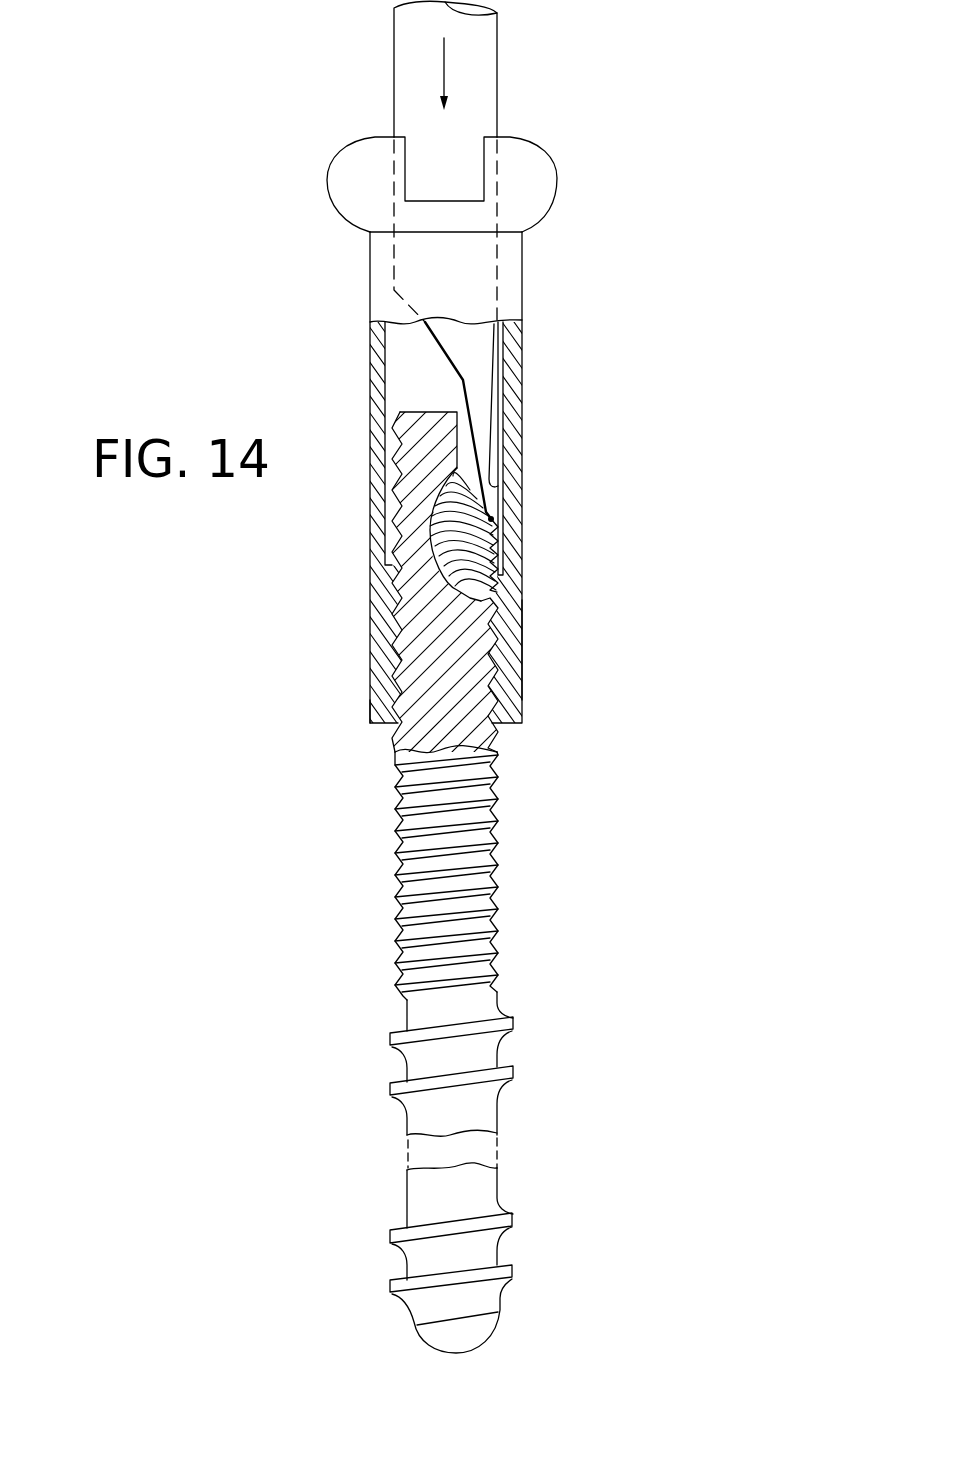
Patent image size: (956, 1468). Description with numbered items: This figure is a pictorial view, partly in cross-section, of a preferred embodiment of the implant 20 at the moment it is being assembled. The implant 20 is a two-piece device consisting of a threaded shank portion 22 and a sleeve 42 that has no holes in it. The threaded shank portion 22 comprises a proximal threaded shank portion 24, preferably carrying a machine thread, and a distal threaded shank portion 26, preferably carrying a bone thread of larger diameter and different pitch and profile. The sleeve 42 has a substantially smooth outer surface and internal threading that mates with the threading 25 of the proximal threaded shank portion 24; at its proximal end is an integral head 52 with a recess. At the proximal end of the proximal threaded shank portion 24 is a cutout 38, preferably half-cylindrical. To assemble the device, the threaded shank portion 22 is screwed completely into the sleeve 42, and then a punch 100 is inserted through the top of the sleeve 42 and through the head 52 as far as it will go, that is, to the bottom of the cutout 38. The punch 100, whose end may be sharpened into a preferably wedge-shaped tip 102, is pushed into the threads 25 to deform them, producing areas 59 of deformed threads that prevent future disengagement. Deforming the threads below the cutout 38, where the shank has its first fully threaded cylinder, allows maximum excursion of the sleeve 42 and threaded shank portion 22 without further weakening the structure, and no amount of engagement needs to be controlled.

The implant 20 is at (276, 768).
The threaded shank portion 22 is at (545, 707).
The proximal threaded shank portion 24 is at (428, 666).
The threading 25 is at (493, 599).
The distal threaded shank portion 26 is at (398, 1231).
The cutout 38 is at (467, 463).
The sleeve 42 is at (522, 380).
The head 52 is at (450, 202).
The areas of deformed threads 59 is at (492, 520).
The punch 100 is at (497, 100).
The tip 102 is at (497, 470).